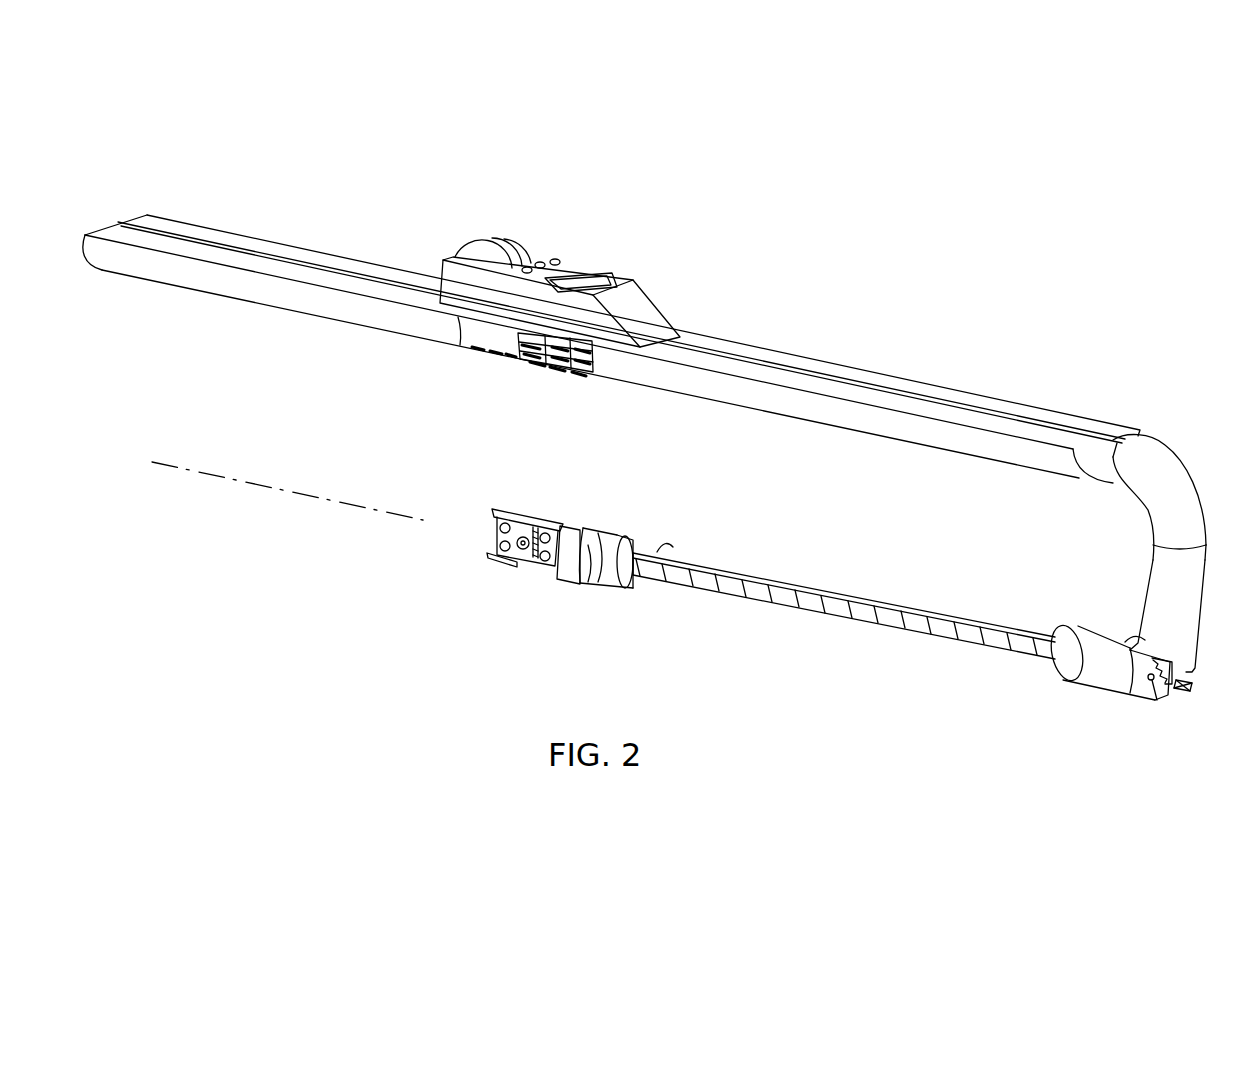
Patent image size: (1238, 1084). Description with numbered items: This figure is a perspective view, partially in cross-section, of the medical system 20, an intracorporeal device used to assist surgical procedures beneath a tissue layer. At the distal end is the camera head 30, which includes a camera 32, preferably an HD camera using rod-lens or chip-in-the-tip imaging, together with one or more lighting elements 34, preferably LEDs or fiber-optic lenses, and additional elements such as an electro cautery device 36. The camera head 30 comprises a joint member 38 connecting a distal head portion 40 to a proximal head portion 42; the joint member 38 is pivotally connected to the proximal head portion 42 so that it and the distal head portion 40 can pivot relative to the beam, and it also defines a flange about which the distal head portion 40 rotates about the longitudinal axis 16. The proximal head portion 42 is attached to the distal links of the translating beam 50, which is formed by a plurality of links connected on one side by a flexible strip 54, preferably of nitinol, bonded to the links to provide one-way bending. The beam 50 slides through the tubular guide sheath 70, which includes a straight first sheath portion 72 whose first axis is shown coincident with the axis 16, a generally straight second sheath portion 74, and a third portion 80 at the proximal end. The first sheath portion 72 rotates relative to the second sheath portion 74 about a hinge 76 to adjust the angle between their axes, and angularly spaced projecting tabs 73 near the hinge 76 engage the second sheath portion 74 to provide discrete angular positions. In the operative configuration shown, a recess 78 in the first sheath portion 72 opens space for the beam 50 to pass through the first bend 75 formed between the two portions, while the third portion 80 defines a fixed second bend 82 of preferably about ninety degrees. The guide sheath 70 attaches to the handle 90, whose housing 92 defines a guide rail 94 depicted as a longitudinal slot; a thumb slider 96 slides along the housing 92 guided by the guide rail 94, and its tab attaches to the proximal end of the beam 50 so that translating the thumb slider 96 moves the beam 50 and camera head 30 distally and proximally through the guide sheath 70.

The axis 16 is at (223, 477).
The medical system 20 is at (893, 192).
The camera head 30 is at (540, 512).
The camera 32 is at (500, 556).
The lighting elements 34 is at (493, 542).
The electro cautery device 36 is at (535, 560).
The joint member 38 is at (590, 570).
The distal head portion 40 is at (570, 530).
The proximal head portion 42 is at (640, 540).
The translating beam 50 is at (878, 578).
The flexible strip 54 is at (722, 565).
The guide sheath 70 is at (1150, 550).
The first sheath portion 72 is at (1075, 662).
The projecting tabs 73 is at (1180, 687).
The second sheath portion 74 is at (1153, 595).
The first bend 75 is at (1137, 636).
The hinge 76 is at (1155, 702).
The recess 78 is at (1135, 695).
The third portion 80 is at (1150, 432).
The second bend 82 is at (1192, 455).
The handle 90 is at (258, 234).
The housing 92 is at (786, 350).
The guide rail 94 is at (928, 399).
The thumb slider 96 is at (592, 265).